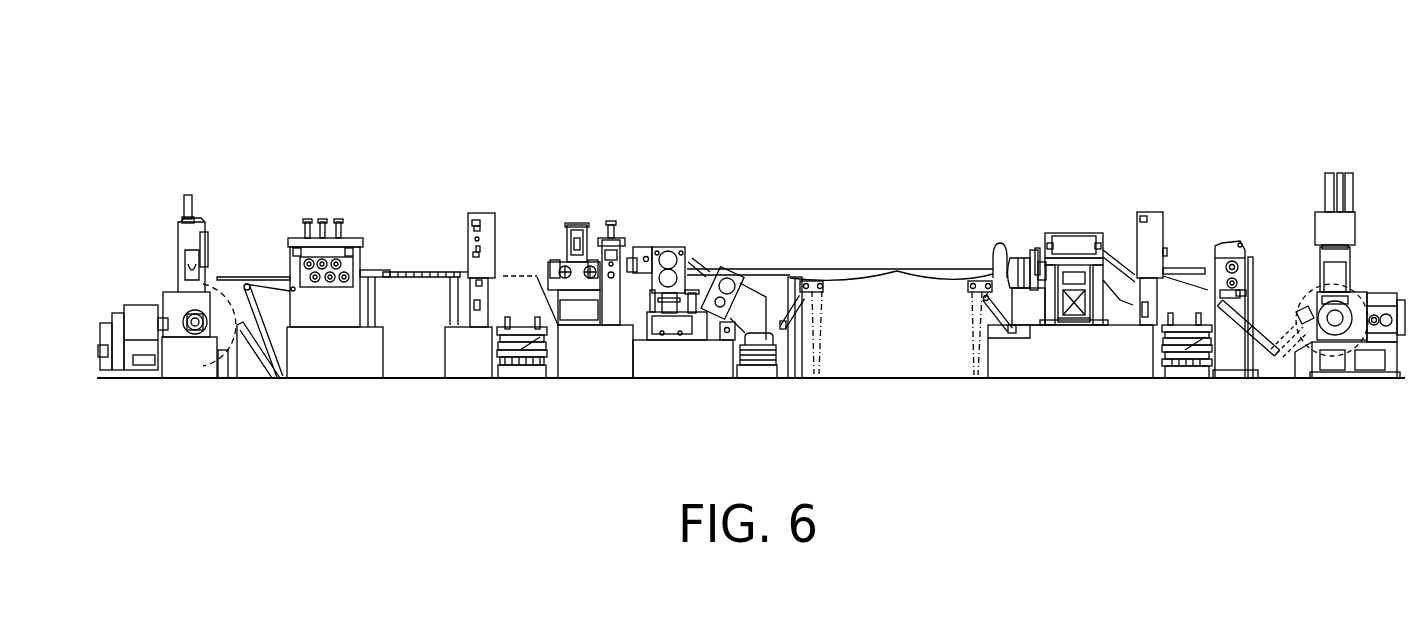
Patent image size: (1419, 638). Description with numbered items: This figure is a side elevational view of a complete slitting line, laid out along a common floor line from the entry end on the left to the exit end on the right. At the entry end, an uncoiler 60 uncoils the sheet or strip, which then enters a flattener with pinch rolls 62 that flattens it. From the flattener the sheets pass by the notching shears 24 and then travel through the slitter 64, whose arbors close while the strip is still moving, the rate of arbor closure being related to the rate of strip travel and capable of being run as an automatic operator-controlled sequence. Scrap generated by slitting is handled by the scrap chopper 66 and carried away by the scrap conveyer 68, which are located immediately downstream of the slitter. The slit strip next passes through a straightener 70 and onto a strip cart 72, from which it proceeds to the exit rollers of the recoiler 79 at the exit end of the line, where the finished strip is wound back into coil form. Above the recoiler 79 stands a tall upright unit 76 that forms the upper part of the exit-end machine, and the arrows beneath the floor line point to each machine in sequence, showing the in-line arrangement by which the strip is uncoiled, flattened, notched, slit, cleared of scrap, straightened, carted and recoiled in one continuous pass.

The uncoiler 60 is at (180, 384).
The flattener with pinch rolls 62 is at (318, 384).
The notching shears 24 is at (585, 384).
The slitter 64 is at (682, 384).
The scrap chopper 66 is at (751, 384).
The scrap conveyer 68 is at (822, 384).
The straightener 70 is at (1072, 384).
The strip cart 72 is at (1184, 384).
The hydraulic cylinder tower 76 is at (1349, 165).
The recoiler 79 is at (1338, 384).